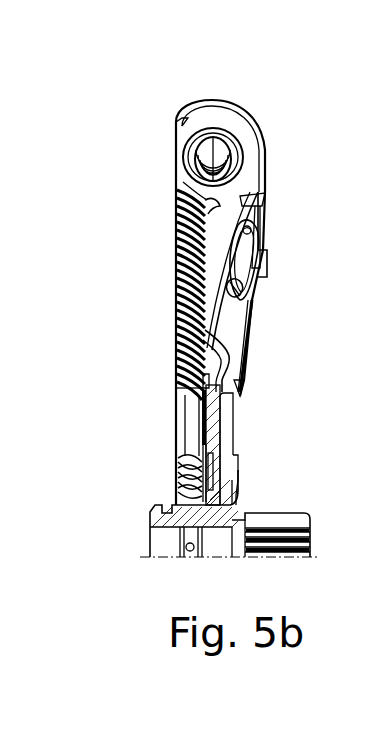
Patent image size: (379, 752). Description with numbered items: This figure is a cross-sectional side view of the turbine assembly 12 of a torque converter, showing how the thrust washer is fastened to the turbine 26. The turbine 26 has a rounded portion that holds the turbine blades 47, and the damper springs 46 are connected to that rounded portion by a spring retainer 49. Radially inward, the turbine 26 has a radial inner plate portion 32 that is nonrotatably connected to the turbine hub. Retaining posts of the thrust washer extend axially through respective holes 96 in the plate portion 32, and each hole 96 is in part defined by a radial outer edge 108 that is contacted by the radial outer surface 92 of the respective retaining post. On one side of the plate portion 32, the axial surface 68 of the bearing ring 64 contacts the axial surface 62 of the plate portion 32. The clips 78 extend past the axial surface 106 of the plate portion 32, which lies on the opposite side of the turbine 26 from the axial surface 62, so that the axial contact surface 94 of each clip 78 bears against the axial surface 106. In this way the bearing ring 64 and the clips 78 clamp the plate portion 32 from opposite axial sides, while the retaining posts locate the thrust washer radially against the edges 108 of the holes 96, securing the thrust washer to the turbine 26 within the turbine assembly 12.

The turbine assembly 12 is at (134, 560).
The turbine 26 is at (268, 267).
The radial inner plate portion 32 is at (217, 436).
The springs 46 is at (220, 122).
The turbine blades 47 is at (245, 122).
The spring retainer 49 is at (250, 213).
The axial surface 62 is at (205, 437).
The bearing ring 64 is at (203, 408).
The axial surface 68 is at (205, 421).
The clips 78 is at (241, 388).
The radial outer surface 92 is at (128, 375).
The axial contact surface 94 is at (246, 368).
The holes 96 is at (234, 403).
The axial surface 106 is at (203, 362).
The radial outer edge 108 is at (203, 380).